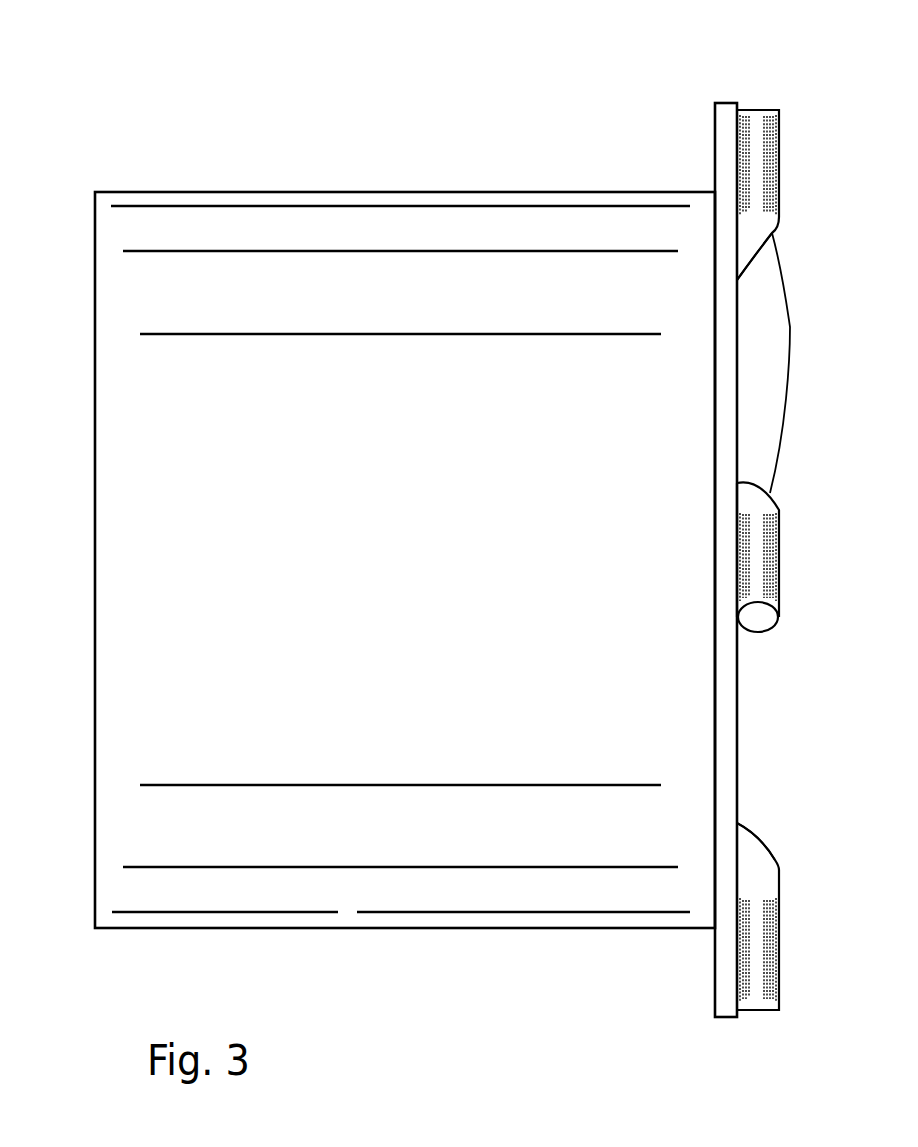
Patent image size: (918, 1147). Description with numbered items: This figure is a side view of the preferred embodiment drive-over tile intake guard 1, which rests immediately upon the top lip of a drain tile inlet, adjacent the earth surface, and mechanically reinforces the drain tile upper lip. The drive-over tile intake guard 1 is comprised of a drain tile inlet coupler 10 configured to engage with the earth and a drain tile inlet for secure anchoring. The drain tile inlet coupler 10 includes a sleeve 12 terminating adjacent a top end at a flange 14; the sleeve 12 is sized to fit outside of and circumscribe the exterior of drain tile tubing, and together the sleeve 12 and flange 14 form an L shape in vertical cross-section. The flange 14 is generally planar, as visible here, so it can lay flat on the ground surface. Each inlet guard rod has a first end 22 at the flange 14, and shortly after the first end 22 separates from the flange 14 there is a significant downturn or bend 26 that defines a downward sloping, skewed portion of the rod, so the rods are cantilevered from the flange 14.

The drive-over tile intake guard 1 is at (127, 93).
The drain tile inlet coupler 10 is at (323, 190).
The sleeve 12 is at (337, 893).
The flange 14 is at (716, 108).
The first end 22 is at (760, 117).
The bend 26 is at (790, 327).